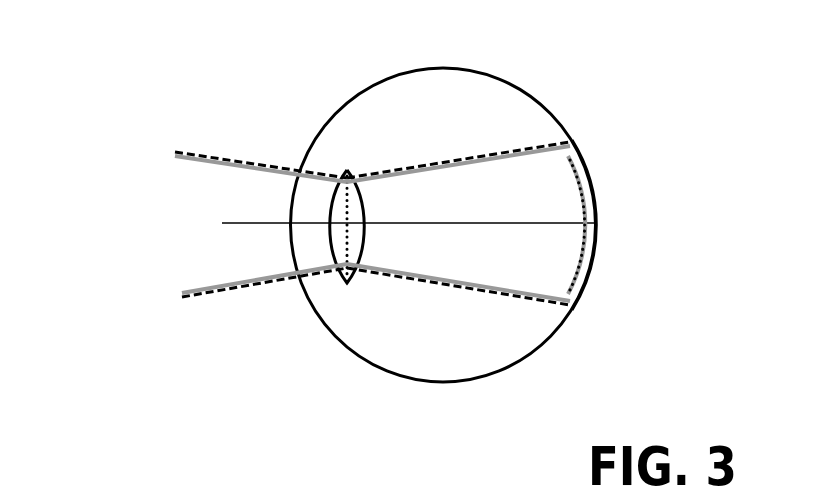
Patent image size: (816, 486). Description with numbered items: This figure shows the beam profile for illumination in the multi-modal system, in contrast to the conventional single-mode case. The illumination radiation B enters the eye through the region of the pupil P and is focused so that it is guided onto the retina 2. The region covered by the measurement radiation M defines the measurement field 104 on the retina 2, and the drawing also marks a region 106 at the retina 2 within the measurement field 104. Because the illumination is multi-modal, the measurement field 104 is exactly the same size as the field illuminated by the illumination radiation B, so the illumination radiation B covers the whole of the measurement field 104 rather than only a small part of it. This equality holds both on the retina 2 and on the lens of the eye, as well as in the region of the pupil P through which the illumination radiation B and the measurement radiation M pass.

The retina 2 is at (590, 276).
The measurement field 104 is at (590, 187).
The illuminated retinal region 106 is at (573, 176).
The pupil P is at (289, 234).
The illumination radiation B is at (204, 160).
The measurement radiation M is at (218, 158).